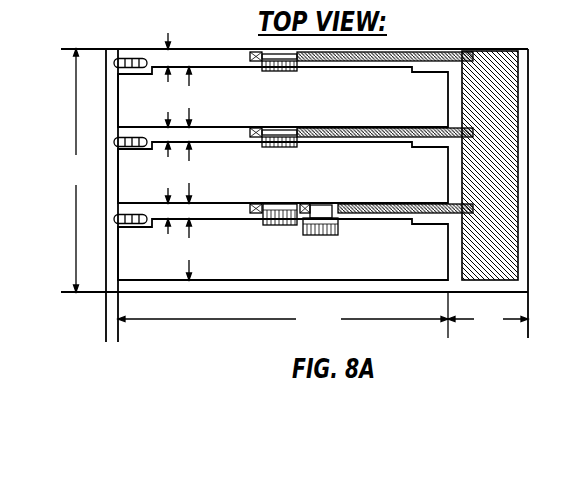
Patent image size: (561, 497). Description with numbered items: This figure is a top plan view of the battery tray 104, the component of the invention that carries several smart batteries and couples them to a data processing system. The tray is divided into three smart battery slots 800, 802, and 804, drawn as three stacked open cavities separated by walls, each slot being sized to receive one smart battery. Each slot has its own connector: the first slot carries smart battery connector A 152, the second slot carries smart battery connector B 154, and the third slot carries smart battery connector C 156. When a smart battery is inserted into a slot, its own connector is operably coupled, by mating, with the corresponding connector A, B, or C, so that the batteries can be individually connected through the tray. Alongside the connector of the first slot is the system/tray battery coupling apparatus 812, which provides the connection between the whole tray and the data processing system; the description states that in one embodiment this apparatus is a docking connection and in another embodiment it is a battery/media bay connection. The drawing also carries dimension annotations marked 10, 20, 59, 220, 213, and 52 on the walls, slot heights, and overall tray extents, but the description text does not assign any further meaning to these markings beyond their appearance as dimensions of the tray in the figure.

The housing wall / partition 10 is at (167, 135).
The wall thickness dimension 20 is at (170, 58).
The cavity height dimension 59 is at (189, 173).
The battery tray 104 is at (115, 60).
The smart battery connector A 152 is at (280, 226).
The smart battery connector B 154 is at (282, 147).
The smart battery connector C 156 is at (282, 72).
The overall height dimension 220 is at (77, 170).
The cavity width dimension 213 is at (283, 319).
The end block width dimension 52 is at (488, 315).
The smart battery slot 800 is at (432, 266).
The smart battery slot 802 is at (432, 190).
The smart battery slot 804 is at (432, 113).
The system/tray battery coupling apparatus 812 is at (320, 236).